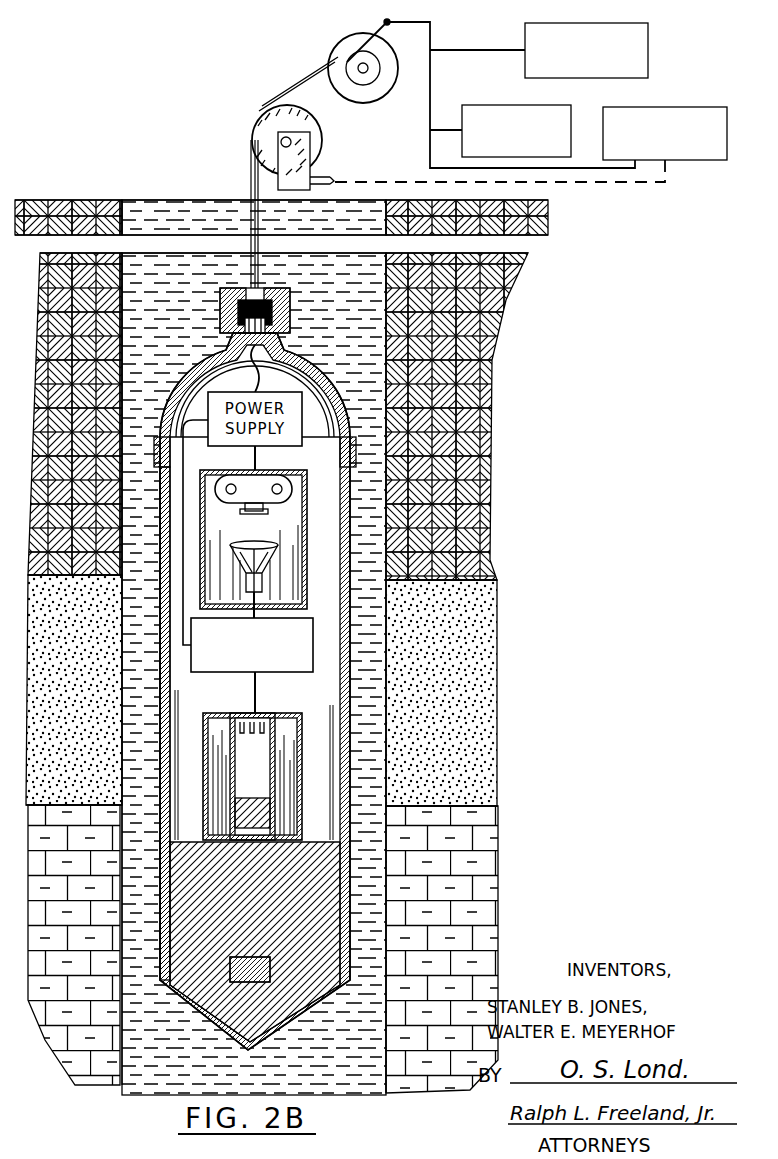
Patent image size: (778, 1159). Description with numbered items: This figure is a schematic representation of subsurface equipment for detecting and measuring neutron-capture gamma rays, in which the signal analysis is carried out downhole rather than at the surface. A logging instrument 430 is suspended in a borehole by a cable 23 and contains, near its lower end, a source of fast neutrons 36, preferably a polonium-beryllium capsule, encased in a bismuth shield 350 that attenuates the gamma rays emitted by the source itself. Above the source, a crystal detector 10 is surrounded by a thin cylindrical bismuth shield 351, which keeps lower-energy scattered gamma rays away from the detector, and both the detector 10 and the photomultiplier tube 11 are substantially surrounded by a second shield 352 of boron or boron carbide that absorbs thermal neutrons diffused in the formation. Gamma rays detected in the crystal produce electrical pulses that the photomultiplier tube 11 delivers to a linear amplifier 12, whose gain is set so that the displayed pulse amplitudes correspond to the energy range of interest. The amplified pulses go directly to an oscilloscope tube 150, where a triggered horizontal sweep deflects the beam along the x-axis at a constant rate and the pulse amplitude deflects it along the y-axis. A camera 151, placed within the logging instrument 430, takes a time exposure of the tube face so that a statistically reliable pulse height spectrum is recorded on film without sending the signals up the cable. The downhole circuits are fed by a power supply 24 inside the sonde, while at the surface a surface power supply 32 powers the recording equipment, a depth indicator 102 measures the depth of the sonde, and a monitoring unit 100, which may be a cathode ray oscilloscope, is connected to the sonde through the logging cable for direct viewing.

The monitoring unit 100 is at (648, 52).
The surface power supply 32 is at (516, 105).
The depth indicator 102 is at (660, 107).
The cable 23 is at (264, 272).
The power supply 24 is at (300, 430).
The logging instrument 430 is at (163, 572).
The camera 151 is at (277, 502).
The oscilloscope tube 150 is at (272, 558).
The linear amplifier 12 is at (313, 635).
The photomultiplier tube 11 is at (282, 756).
The shield 351 is at (206, 740).
The second shield 352 is at (270, 778).
The crystal detector 10 is at (240, 815).
The shield 350 is at (200, 932).
The source of fast neutrons 36 is at (262, 982).